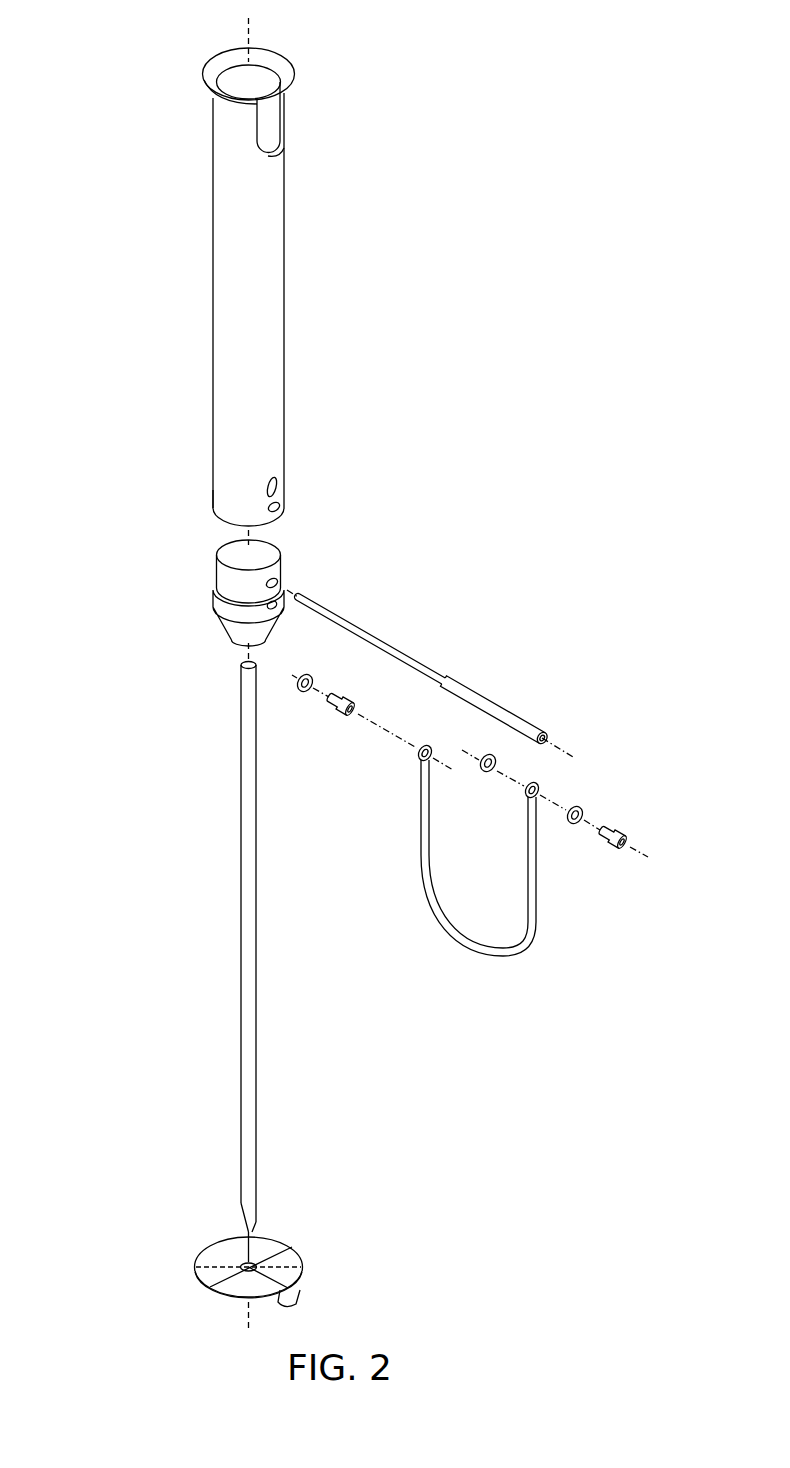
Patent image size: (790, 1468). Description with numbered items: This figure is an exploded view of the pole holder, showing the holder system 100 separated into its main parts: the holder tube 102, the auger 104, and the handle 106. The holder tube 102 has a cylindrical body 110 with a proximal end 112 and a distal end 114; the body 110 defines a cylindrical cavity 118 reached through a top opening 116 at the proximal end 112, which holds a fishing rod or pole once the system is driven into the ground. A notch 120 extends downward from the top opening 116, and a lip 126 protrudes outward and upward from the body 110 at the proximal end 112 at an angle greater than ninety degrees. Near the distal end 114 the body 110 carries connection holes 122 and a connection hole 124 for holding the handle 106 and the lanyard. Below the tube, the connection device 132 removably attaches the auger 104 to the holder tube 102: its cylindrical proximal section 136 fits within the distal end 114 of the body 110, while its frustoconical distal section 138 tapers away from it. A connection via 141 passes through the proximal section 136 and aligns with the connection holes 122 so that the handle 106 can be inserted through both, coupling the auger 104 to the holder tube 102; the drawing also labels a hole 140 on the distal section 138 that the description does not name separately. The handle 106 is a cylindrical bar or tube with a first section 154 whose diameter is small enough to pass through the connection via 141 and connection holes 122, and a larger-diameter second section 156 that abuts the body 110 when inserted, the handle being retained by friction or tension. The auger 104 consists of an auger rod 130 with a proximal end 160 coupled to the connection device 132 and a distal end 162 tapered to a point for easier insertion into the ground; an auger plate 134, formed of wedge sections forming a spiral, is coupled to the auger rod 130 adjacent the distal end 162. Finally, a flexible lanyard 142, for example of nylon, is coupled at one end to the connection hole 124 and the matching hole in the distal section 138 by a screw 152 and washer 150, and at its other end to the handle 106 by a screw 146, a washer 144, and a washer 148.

The holder system 100 is at (440, 47).
The holder tube 102 is at (166, 230).
The auger 104 is at (210, 843).
The handle 106 is at (440, 640).
The body 110 is at (230, 371).
The proximal end 112 is at (293, 78).
The distal end 114 is at (210, 517).
The top opening 116 is at (218, 77).
The cavity 118 is at (262, 82).
The notch 120 is at (282, 151).
The connection holes 122 is at (305, 480).
The connection hole 124 is at (283, 507).
The lip 126 is at (210, 98).
The auger rod 130 is at (245, 943).
The connection device 132 is at (218, 612).
The auger plate 134 is at (222, 1257).
The proximal section 136 is at (218, 579).
The distal section 138 is at (215, 636).
The lower hole 140 is at (283, 606).
The connection via 141 is at (282, 582).
The lanyard 142 is at (474, 947).
The washer 144 is at (618, 828).
The bolt and/or screw 146 is at (574, 805).
The washer 148 is at (481, 775).
The washer 150 is at (300, 692).
The bolt and/or screw 152 is at (342, 714).
The first section 154 is at (378, 634).
The second section 156 is at (497, 704).
The proximal end 160 is at (238, 668).
The distal end 162 is at (250, 1226).